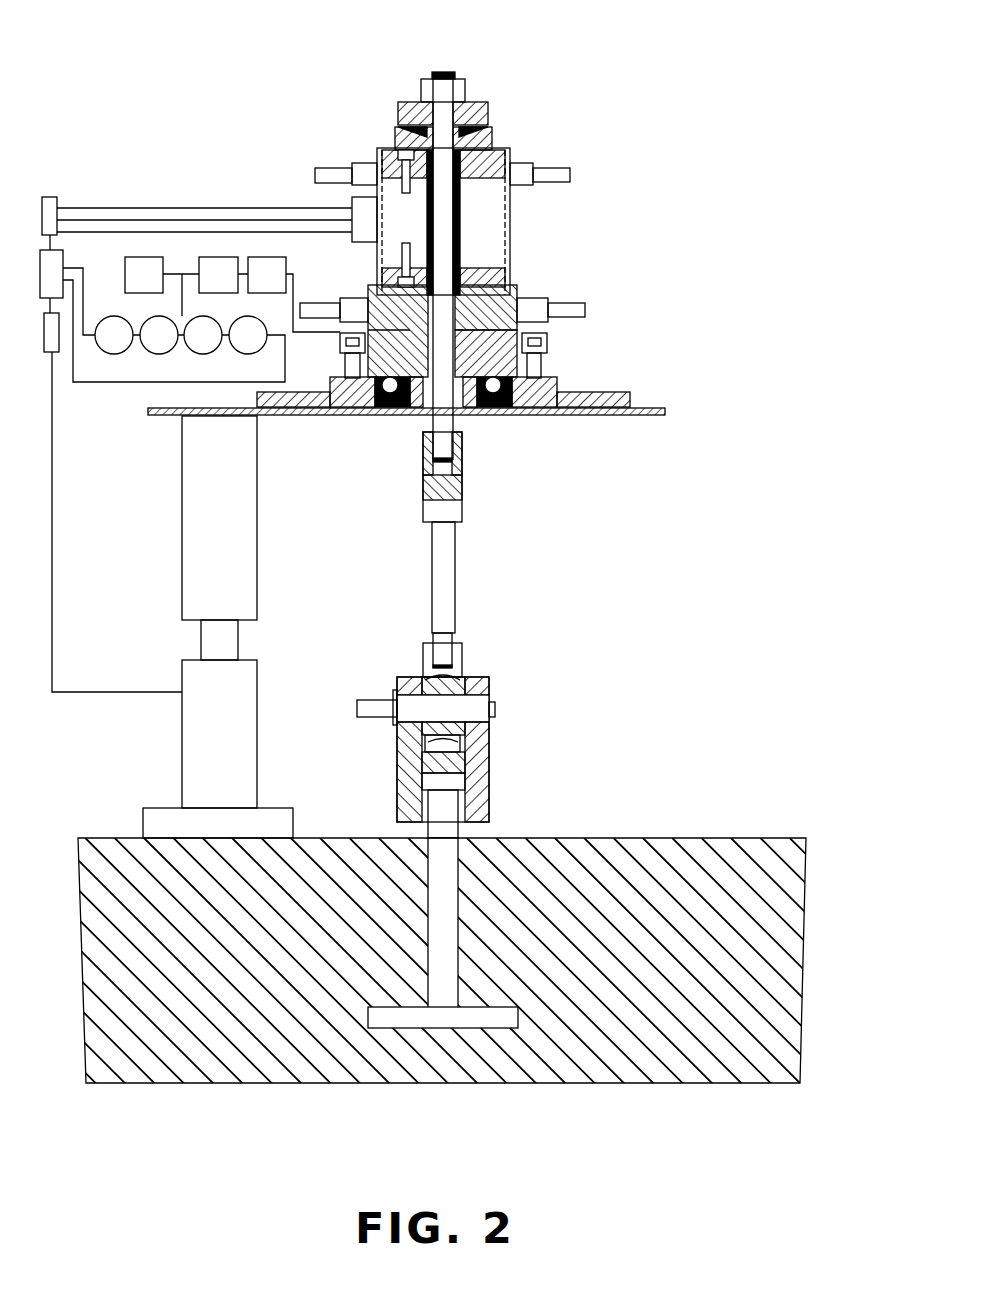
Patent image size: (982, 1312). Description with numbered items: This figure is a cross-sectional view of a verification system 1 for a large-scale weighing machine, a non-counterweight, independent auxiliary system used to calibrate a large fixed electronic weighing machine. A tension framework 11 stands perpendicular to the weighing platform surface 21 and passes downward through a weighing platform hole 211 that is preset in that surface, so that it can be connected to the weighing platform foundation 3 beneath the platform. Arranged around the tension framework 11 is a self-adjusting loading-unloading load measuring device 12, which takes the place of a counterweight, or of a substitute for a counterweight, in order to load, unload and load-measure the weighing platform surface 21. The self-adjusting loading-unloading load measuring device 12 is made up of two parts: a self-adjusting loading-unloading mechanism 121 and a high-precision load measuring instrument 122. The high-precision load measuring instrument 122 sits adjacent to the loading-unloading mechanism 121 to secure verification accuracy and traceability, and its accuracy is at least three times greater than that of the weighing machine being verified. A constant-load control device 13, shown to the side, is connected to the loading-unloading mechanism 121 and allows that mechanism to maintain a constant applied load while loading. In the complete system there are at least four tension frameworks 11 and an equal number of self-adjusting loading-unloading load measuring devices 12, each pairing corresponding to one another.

The verification system 1 is at (625, 105).
The tension framework 11 is at (453, 72).
The self-adjusting loading-unloading load measuring device 12 is at (527, 239).
The self-adjusting loading-unloading mechanism 121 is at (495, 312).
The high-precision load measuring instrument 122 is at (482, 223).
The constant-load control device 13 is at (143, 270).
The weighing platform surface 21 is at (645, 408).
The weighing platform hole 211 is at (468, 415).
The weighing platform foundation 3 is at (522, 860).